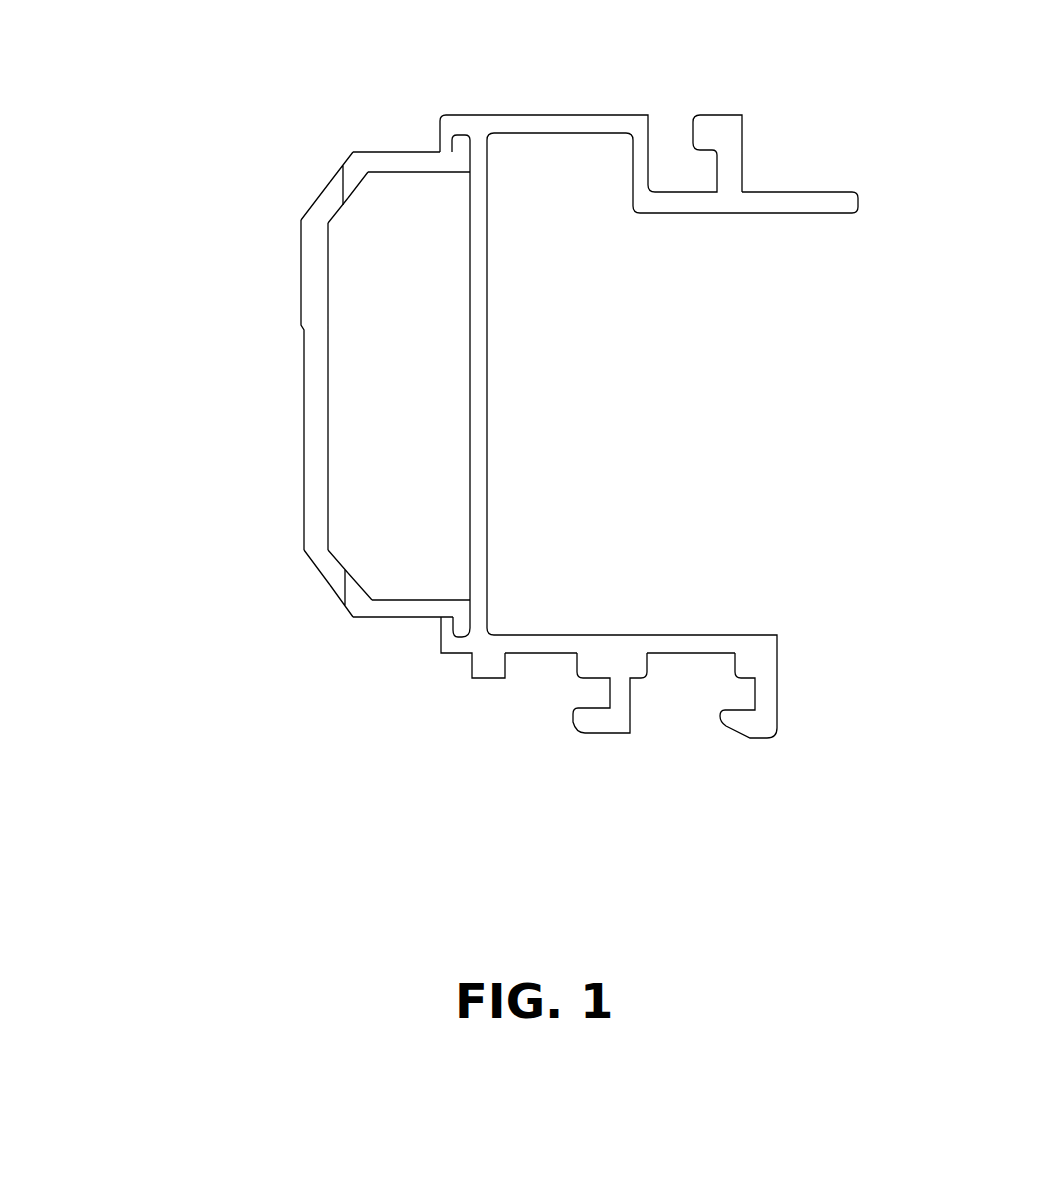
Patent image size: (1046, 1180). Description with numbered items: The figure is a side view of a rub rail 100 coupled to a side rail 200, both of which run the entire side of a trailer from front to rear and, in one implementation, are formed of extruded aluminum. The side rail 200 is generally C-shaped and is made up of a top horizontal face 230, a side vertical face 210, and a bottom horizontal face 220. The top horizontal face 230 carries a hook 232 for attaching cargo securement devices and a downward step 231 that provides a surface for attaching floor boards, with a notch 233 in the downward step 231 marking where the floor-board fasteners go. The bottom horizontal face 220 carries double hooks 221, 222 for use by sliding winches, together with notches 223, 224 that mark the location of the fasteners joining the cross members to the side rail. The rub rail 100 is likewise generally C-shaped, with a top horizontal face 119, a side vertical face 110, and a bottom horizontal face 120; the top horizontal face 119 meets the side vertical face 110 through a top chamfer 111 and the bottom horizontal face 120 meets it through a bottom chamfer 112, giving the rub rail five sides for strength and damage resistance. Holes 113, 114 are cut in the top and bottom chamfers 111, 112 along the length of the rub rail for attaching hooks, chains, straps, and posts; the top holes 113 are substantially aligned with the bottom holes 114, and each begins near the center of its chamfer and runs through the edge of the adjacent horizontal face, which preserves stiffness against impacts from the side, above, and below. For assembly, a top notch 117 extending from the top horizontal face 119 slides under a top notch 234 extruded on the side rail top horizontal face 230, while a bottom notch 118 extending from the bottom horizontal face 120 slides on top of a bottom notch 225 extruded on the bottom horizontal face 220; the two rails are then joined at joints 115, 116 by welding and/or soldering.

The rub rail 100 is at (258, 401).
The side vertical face 110 is at (305, 385).
The top chamfer 111 is at (320, 192).
The bottom chamfer 112 is at (320, 580).
The top holes 113 is at (333, 147).
The bottom holes 114 is at (345, 607).
The joint 115 is at (433, 148).
The joint 116 is at (437, 620).
The top notch 117 is at (460, 172).
The bottom notch 118 is at (455, 588).
The top horizontal face 119 is at (387, 147).
The bottom horizontal face 120 is at (397, 618).
The side rail 200 is at (696, 432).
The side vertical face 210 is at (490, 420).
The bottom horizontal face 220 is at (611, 698).
The double hook 221 is at (605, 736).
The double hook 222 is at (762, 741).
The notch 223 is at (537, 656).
The notch 224 is at (685, 656).
The bottom notch 225 is at (448, 657).
The top horizontal face 230 is at (700, 117).
The downward step 231 is at (857, 205).
The hook 232 is at (728, 113).
The notch 233 is at (800, 192).
The top notch 234 is at (445, 117).